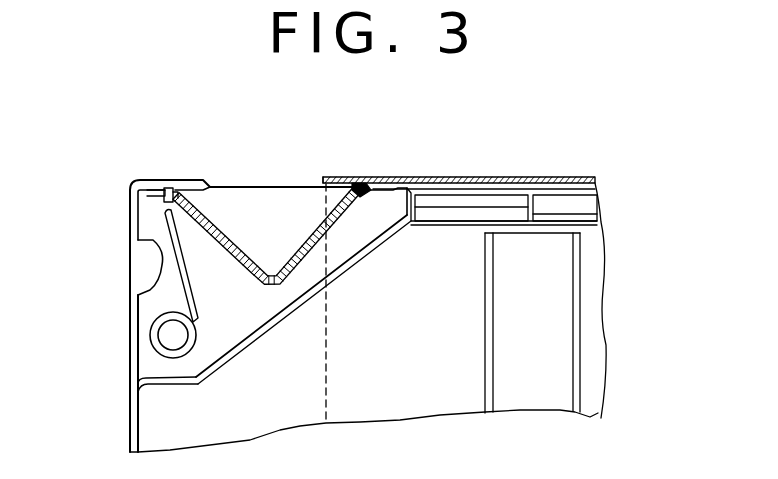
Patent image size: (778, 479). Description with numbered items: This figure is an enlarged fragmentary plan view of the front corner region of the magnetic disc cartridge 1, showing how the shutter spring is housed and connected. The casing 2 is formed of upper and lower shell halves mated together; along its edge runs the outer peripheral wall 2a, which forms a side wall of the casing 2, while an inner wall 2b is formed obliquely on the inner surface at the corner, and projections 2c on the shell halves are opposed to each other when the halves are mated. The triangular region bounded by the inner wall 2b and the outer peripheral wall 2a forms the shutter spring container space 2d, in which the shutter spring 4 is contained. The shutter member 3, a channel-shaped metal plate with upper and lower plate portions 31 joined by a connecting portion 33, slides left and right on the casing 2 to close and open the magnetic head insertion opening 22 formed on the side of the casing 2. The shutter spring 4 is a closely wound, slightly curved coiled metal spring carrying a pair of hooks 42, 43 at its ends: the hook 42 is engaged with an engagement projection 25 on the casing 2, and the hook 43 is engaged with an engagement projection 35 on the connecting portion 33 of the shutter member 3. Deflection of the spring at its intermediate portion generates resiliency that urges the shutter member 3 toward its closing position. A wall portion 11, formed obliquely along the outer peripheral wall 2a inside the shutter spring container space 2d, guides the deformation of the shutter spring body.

The magnetic disc cartridge 1 is at (533, 136).
The casing 2 is at (128, 410).
The outer peripheral wall 2a is at (131, 300).
The inner wall 2b is at (268, 323).
The projection 2c is at (150, 342).
The shutter spring container space 2d is at (238, 206).
The shutter member 3 is at (563, 181).
The shutter spring 4 is at (306, 240).
The wall portion 11 is at (168, 232).
The magnetic head insertion opening 22 is at (553, 313).
The engagement projection 25 is at (157, 189).
The plate portion 31 is at (318, 400).
The connecting portion 33 is at (471, 178).
The engagement projection 35 is at (382, 185).
The hook 42 is at (176, 190).
The hook 43 is at (356, 180).